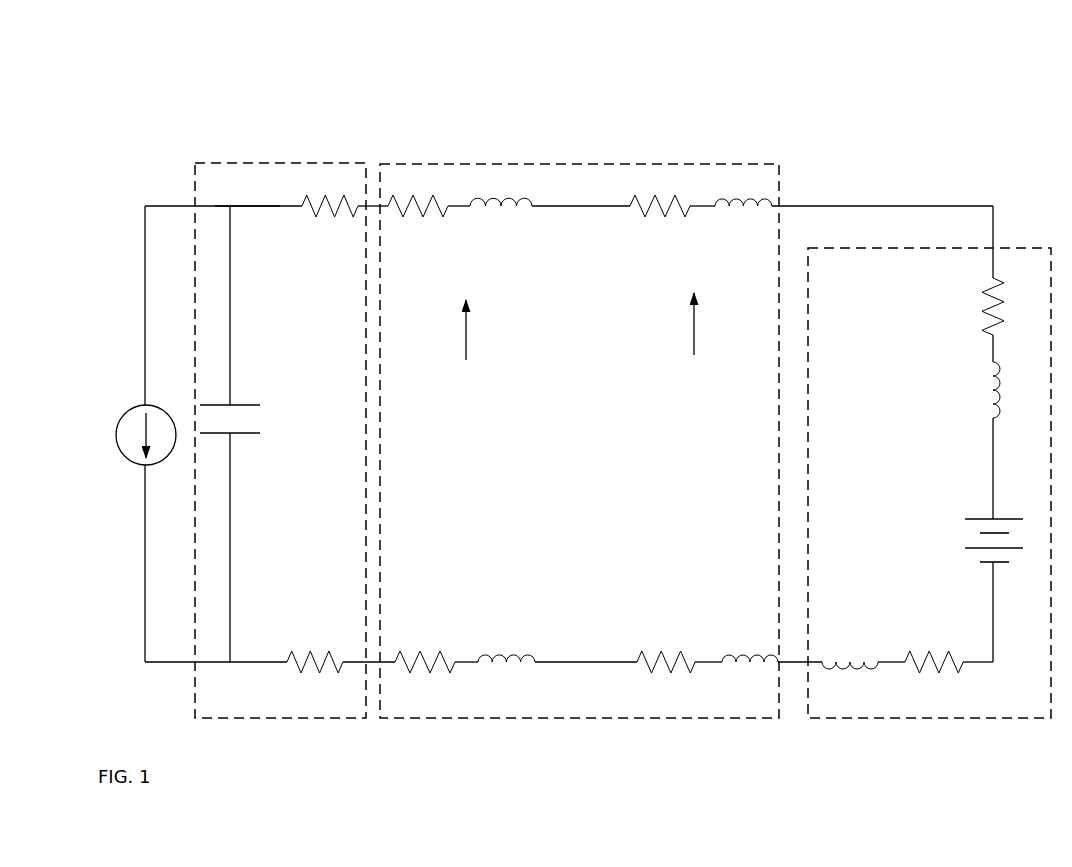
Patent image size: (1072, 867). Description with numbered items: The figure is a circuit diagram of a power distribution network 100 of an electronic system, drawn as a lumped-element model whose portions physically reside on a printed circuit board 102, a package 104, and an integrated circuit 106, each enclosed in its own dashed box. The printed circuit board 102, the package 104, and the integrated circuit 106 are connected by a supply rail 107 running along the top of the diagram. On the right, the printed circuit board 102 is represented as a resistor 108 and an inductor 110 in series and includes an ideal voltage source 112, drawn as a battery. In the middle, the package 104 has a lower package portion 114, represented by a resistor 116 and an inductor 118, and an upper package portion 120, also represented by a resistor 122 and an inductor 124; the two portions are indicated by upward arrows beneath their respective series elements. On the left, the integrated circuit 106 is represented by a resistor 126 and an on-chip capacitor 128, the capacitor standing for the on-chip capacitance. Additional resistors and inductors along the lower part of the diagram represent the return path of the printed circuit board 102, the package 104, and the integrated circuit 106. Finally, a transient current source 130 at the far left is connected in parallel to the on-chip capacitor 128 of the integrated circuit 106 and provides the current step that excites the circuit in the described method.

The power distribution network 100 is at (174, 142).
The printed circuit board 102 is at (923, 248).
The package 104 is at (645, 148).
The integrated circuit 106 is at (330, 157).
The supply rail 107 is at (266, 206).
The resistor 108 is at (973, 306).
The inductor 110 is at (978, 390).
The ideal voltage source 112 is at (972, 540).
The lower package portion 114 is at (690, 339).
The resistor 116 is at (660, 223).
The inductor 118 is at (743, 221).
The upper package portion 120 is at (462, 343).
The resistor 122 is at (418, 222).
The inductor 124 is at (501, 217).
The resistor 126 is at (330, 227).
The on-chip capacitor 128 is at (249, 434).
The transient current source 130 is at (123, 477).